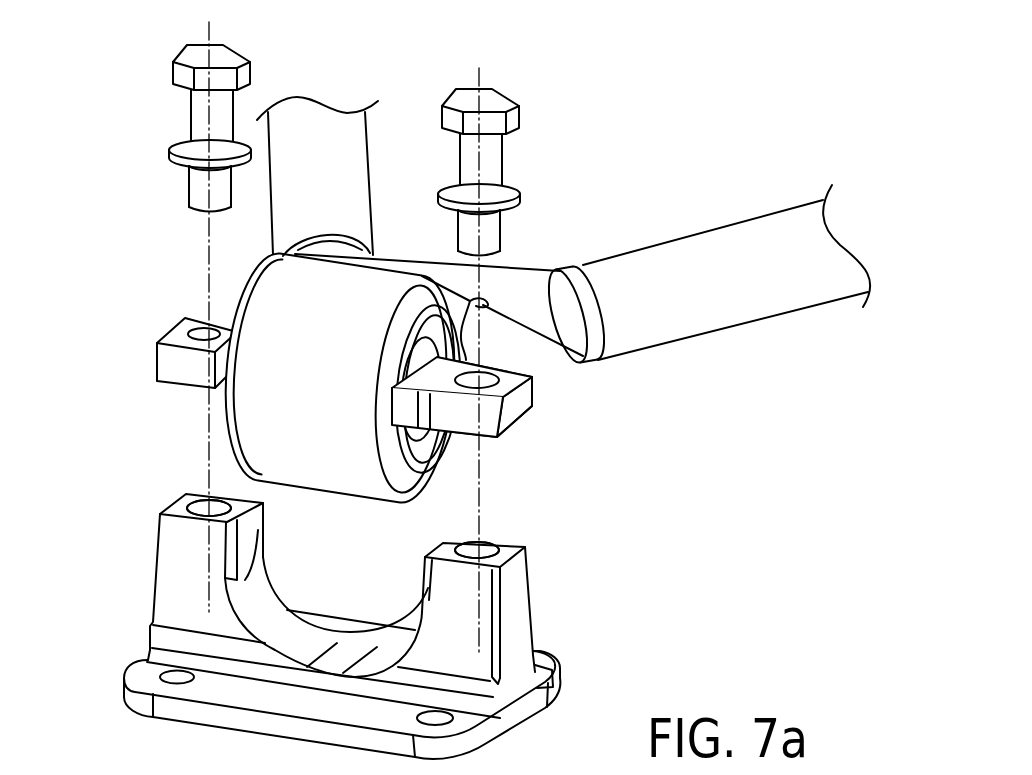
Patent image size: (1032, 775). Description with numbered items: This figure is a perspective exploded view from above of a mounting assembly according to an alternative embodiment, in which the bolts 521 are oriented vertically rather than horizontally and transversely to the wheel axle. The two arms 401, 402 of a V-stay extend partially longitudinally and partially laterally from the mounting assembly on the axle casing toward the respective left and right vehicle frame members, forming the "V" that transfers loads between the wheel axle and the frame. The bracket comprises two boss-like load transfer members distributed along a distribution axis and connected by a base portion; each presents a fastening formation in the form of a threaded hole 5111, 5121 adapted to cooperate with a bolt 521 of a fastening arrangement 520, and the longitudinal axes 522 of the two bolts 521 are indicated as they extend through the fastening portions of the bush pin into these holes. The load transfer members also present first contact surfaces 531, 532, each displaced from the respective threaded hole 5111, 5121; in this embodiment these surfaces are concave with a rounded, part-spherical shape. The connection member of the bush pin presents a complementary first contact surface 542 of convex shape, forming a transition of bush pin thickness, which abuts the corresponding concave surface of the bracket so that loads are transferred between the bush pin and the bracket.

The arm 401 is at (742, 293).
The arm 402 is at (336, 143).
The fastening assembly 520 is at (350, 128).
The bolt 521 is at (198, 122).
The longitudinal axis 522 is at (198, 264).
The first contact surface 531 is at (440, 582).
The first contact surface 532 is at (262, 540).
The first contact surface 542 is at (430, 437).
The threaded hole 5111 is at (487, 546).
The threaded hole 5121 is at (202, 507).